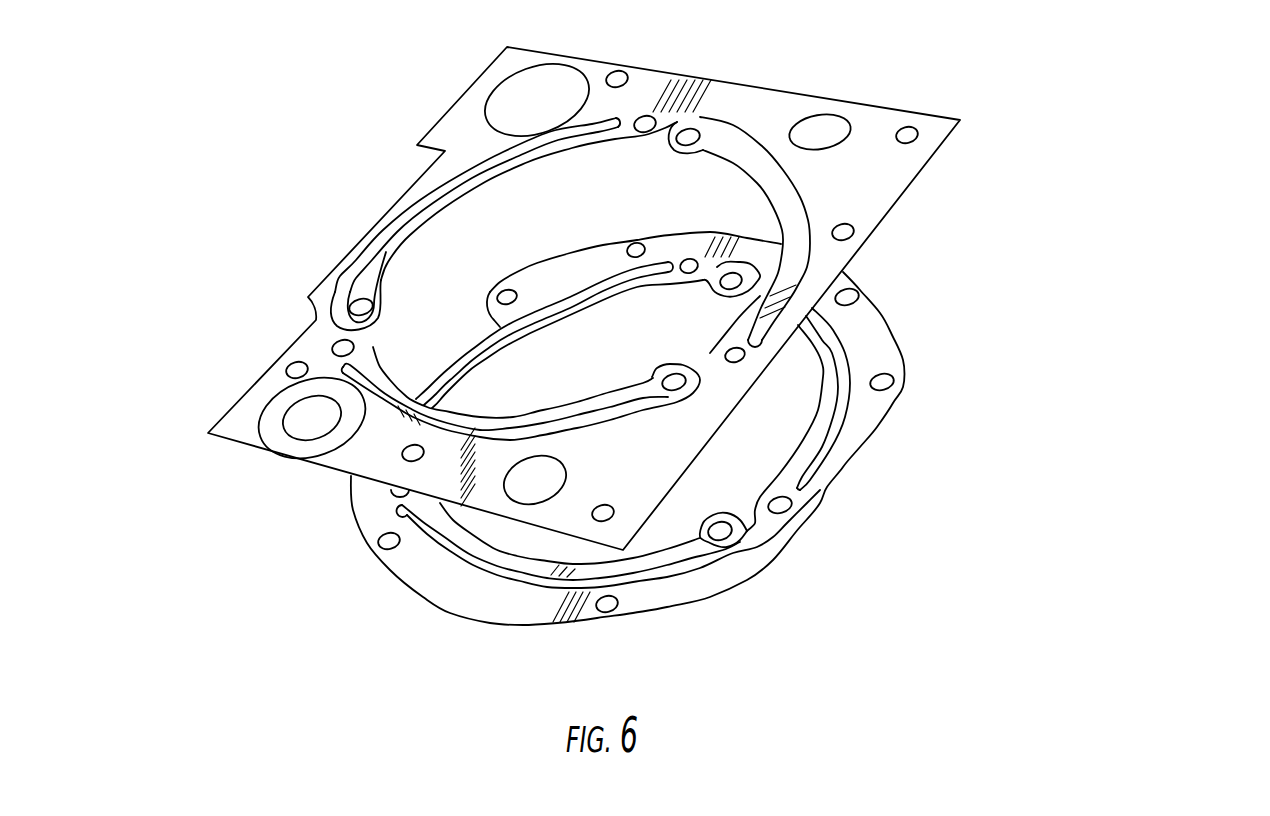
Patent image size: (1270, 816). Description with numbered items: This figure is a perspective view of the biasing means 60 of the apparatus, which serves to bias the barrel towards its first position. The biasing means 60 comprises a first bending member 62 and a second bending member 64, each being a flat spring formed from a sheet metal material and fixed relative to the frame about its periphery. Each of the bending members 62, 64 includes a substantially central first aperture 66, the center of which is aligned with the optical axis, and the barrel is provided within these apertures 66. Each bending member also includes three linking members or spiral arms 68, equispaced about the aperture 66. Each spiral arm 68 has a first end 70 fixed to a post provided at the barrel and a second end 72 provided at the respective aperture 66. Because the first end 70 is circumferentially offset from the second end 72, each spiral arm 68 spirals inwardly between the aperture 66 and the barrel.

The biasing means 60 is at (1115, 283).
The first bending member 62 is at (758, 100).
The second bending member 64 is at (867, 437).
The first aperture 66 is at (552, 370).
The spiral arm 68 is at (490, 173).
The first end 70 is at (727, 147).
The second end 72 is at (843, 272).